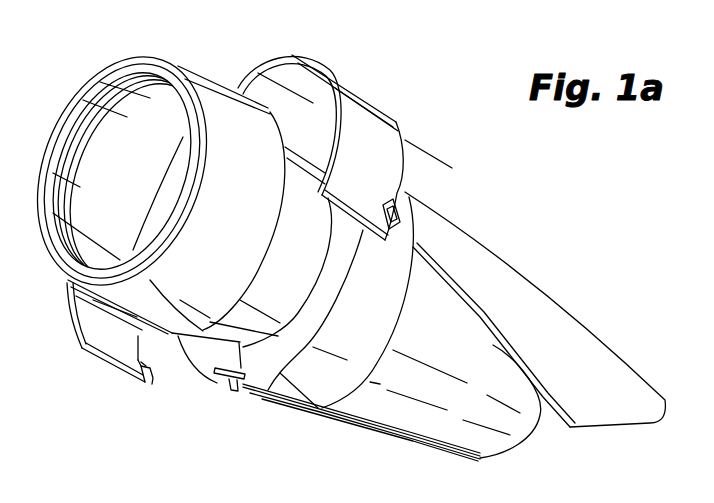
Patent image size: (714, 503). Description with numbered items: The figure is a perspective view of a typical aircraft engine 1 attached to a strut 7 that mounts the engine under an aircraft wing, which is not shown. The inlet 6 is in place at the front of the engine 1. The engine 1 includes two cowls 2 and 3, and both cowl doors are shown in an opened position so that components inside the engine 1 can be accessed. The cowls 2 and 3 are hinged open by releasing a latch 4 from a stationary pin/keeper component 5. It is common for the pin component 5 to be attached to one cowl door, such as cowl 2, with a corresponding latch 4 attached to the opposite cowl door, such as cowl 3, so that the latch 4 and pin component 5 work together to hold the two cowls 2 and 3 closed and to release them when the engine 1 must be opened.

The aircraft engine 1 is at (295, 268).
The cowl 2 is at (75, 333).
The cowl 3 is at (357, 103).
The latch 4 is at (394, 156).
The pin/keeper component 5 is at (219, 386).
The inlet 6 is at (109, 146).
The strut 7 is at (515, 297).